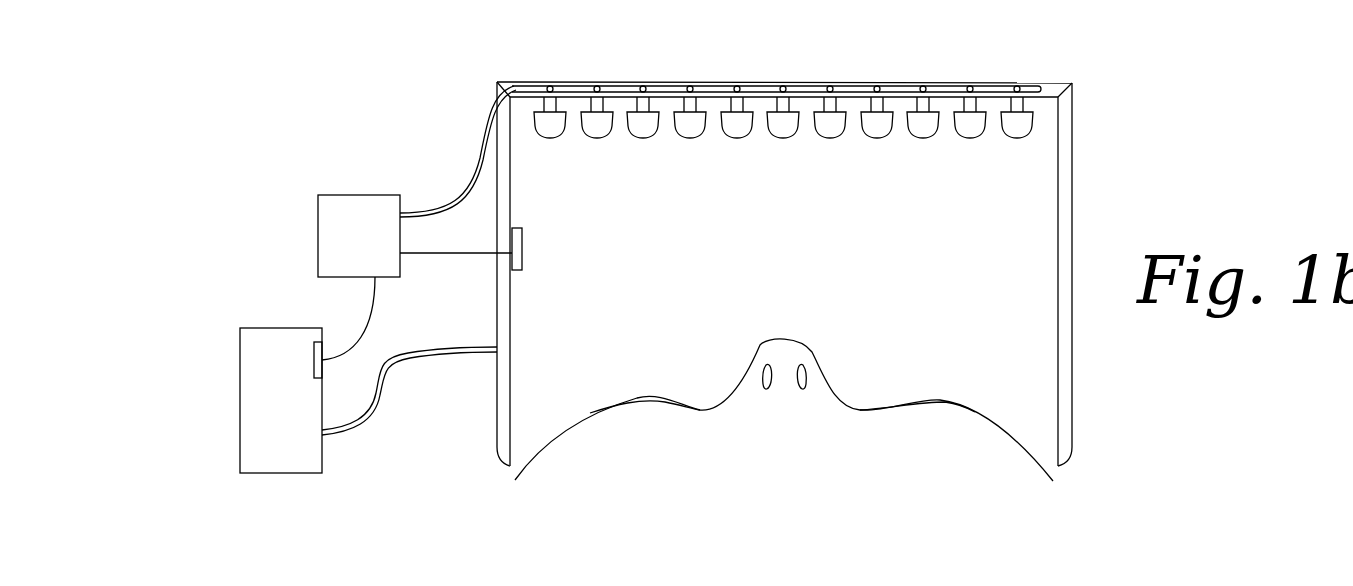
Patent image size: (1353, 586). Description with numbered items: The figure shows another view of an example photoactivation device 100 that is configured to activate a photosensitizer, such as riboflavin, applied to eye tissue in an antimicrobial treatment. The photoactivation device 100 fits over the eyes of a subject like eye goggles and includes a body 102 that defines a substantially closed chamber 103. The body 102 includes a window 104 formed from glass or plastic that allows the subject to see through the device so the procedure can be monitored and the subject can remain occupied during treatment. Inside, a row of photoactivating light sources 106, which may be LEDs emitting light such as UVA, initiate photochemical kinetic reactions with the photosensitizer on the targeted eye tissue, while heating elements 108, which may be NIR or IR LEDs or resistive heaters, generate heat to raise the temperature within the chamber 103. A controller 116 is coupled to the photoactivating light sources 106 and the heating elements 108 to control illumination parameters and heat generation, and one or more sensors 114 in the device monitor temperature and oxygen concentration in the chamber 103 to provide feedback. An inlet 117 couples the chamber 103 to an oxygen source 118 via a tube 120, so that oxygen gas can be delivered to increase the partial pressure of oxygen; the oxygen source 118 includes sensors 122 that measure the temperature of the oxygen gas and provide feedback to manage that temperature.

The photoactivation device 100 is at (303, 130).
The body 102 is at (1067, 143).
The chamber 103 is at (997, 265).
The window 104 is at (719, 82).
The photoactivating light sources 106 is at (553, 124).
The heating elements 108 is at (600, 124).
The sensors 114 is at (512, 268).
The controller 116 is at (318, 221).
The inlet 117 is at (508, 350).
The oxygen source 118 is at (240, 370).
The tube 120 is at (432, 360).
The sensors 122 is at (317, 357).